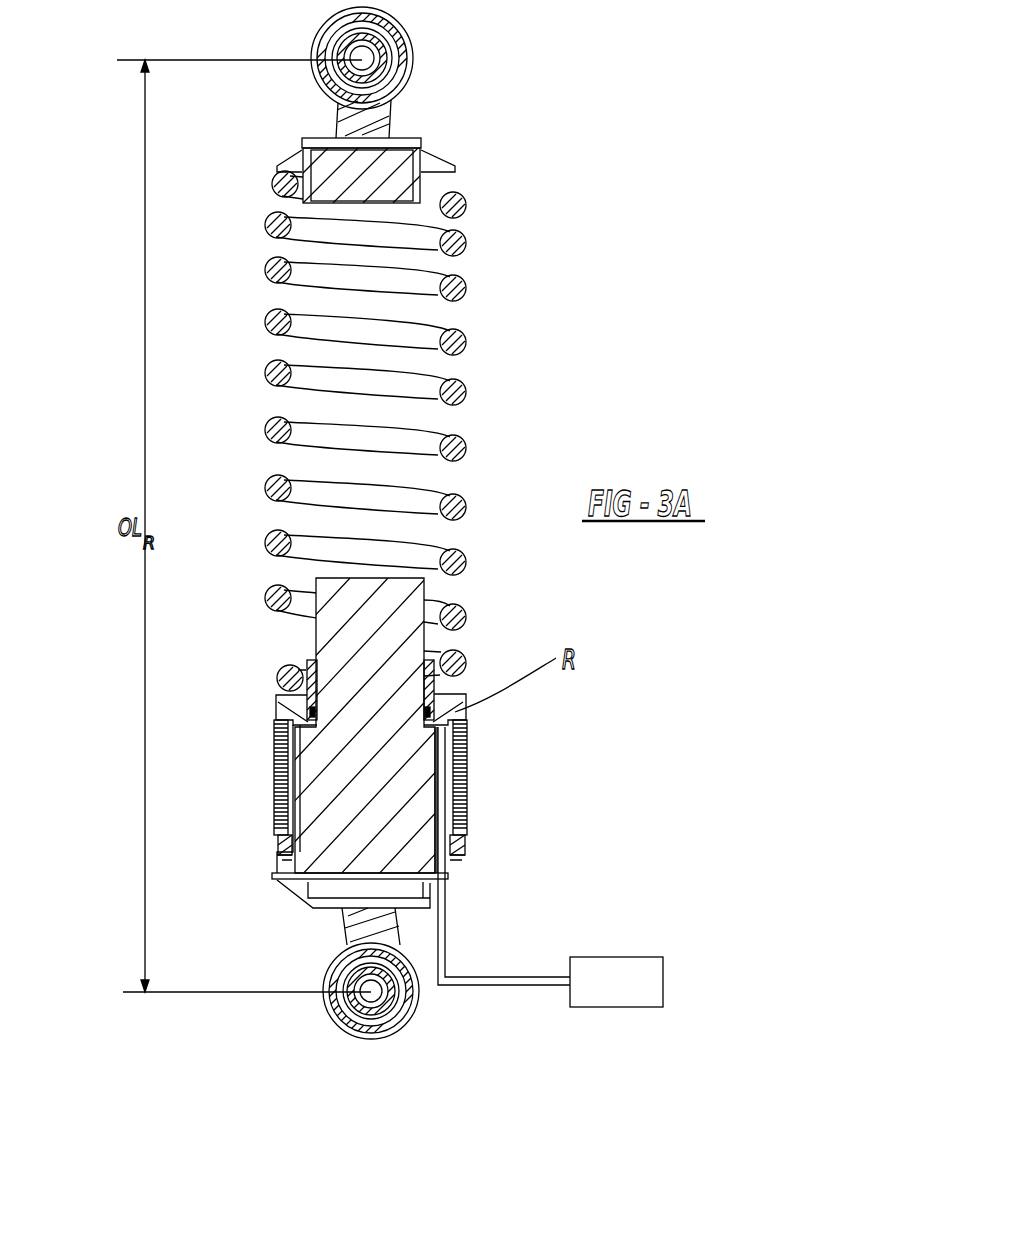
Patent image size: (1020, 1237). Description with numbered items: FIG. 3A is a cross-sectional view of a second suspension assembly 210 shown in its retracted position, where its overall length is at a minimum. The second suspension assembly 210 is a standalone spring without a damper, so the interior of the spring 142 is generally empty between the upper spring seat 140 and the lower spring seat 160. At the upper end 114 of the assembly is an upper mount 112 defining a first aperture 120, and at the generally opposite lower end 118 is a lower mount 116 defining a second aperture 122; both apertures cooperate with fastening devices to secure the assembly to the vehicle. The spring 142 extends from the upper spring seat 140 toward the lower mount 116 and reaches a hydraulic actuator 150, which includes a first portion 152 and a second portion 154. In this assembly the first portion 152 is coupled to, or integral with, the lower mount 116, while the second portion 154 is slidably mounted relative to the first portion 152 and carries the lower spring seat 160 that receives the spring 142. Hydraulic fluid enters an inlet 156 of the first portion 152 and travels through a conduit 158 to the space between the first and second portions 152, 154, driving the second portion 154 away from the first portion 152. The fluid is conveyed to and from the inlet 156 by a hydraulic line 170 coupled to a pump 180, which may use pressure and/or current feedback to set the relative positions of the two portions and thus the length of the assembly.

The upper mount 112 is at (413, 42).
The upper end 114 is at (393, 13).
The lower mount 116 is at (377, 1040).
The lower end 118 is at (320, 1005).
The first aperture 120 is at (367, 58).
The second aperture 122 is at (367, 982).
The upper spring seat 140 is at (437, 165).
The spring 142 is at (465, 340).
The hydraulic actuator 150 is at (490, 737).
The first portion 152 is at (455, 863).
The second portion 154 is at (450, 720).
The inlet 156 is at (440, 877).
The conduit 158 is at (440, 795).
The lower spring seat 160 is at (463, 688).
The hydraulic line 170 is at (483, 987).
The pump 180 is at (620, 1007).
The second suspension assembly 210 is at (618, 98).